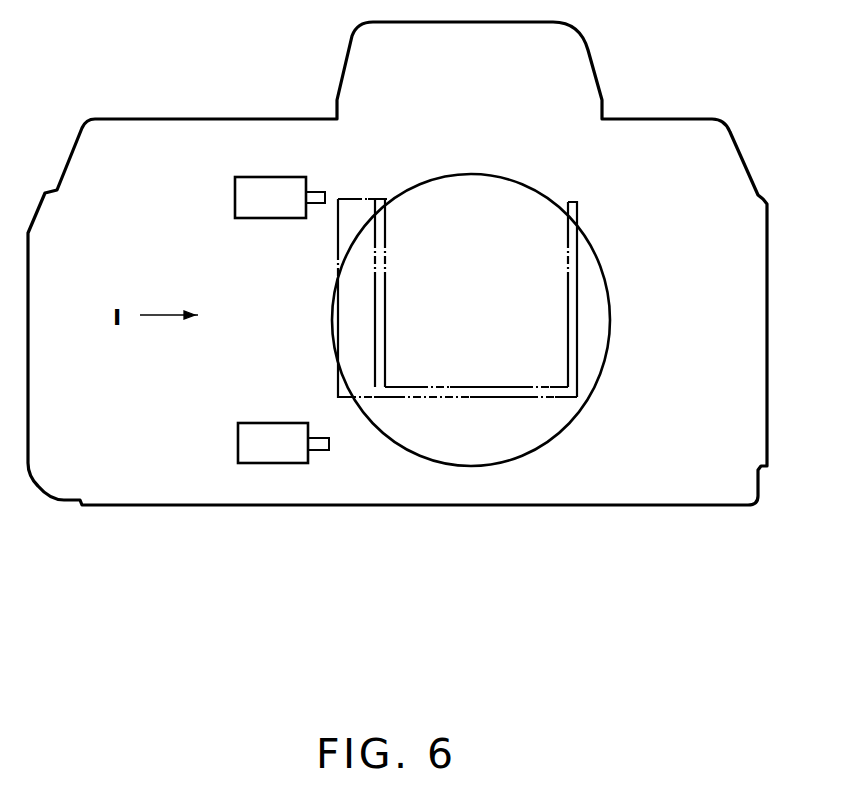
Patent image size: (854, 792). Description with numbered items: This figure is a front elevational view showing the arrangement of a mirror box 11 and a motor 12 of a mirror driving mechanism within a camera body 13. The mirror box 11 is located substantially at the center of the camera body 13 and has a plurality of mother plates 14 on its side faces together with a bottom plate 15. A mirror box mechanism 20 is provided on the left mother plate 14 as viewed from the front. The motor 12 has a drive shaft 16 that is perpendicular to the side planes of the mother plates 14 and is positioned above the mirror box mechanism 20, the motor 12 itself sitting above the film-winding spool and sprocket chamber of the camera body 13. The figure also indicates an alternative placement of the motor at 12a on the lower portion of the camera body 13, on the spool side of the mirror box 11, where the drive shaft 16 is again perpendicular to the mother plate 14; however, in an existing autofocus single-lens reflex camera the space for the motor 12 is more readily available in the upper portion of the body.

The mirror box 11 is at (532, 399).
The motor 12 is at (276, 190).
The alternative motor position 12a is at (275, 464).
The camera body 13 is at (680, 137).
The mother plates 14 is at (386, 229).
The bottom plate 15 is at (445, 386).
The drive shaft 16 is at (318, 194).
The mirror box mechanism 20 is at (337, 249).